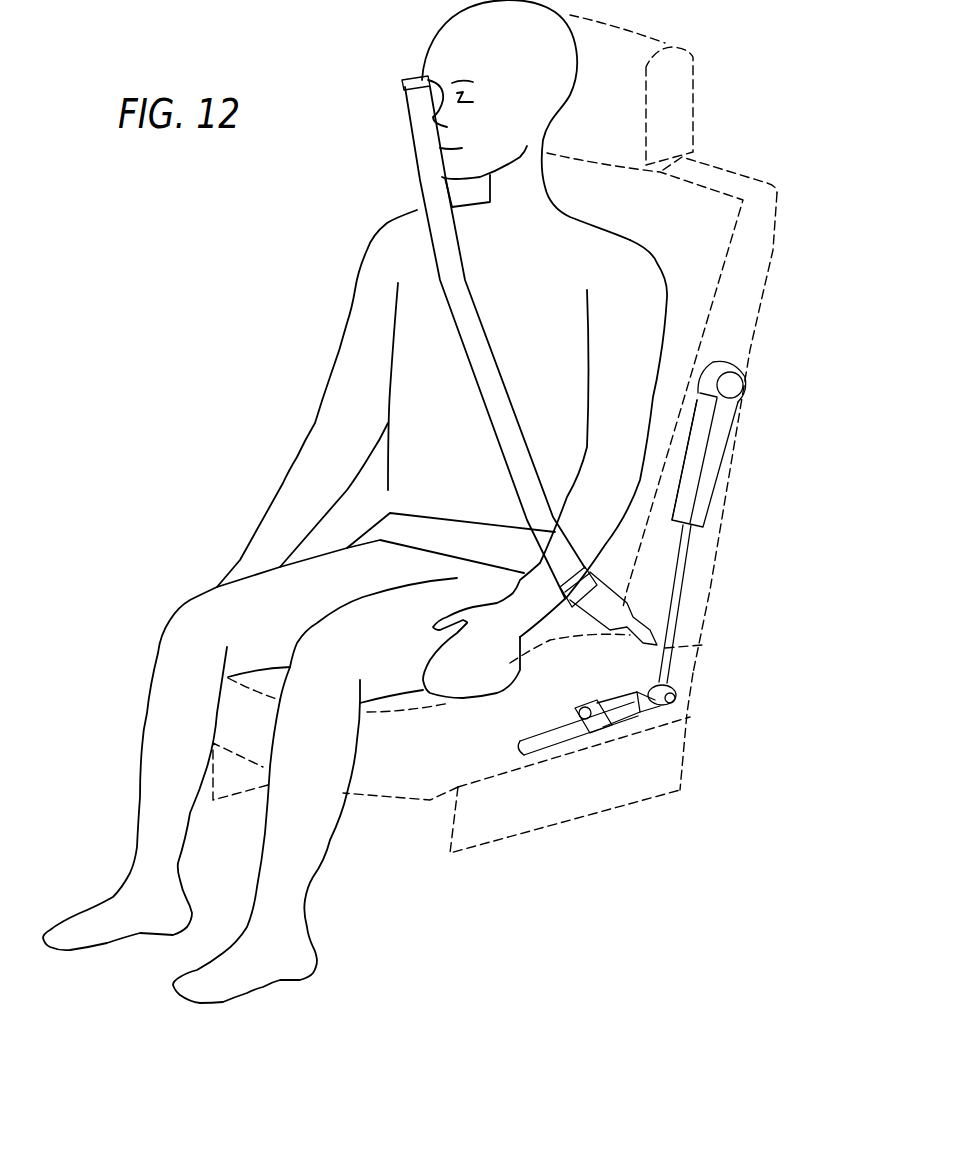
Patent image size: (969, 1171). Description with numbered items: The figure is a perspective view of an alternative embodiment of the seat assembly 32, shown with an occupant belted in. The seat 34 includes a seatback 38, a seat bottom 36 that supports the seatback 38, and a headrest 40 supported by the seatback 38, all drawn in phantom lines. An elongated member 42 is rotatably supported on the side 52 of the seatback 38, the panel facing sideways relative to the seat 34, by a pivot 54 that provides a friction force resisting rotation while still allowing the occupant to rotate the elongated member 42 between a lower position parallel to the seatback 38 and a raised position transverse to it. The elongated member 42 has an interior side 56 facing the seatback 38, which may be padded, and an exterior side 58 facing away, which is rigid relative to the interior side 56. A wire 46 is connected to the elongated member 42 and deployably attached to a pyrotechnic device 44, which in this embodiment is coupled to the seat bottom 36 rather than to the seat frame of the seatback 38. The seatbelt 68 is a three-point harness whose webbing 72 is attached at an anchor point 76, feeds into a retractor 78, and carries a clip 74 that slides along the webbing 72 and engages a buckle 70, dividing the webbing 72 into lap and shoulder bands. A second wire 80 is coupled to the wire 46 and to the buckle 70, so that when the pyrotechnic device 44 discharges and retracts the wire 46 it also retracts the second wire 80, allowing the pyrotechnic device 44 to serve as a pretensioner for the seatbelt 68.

The seat assembly 32 is at (763, 123).
The seat 34 is at (375, 808).
The seat bottom 36 is at (697, 683).
The seatback 38 is at (777, 247).
The headrest 40 is at (678, 67).
The elongated member 42 is at (727, 438).
The pyrotechnic device 44 is at (543, 752).
The wire 46 is at (682, 587).
The side 52 is at (755, 291).
The pivot 54 is at (726, 363).
The interior side 56 is at (690, 438).
The exterior side 58 is at (715, 487).
The seatbelt 68 is at (467, 395).
The buckle 70 is at (600, 617).
The webbing 72 is at (490, 425).
The clip 74 is at (565, 607).
The anchor point 76 is at (353, 547).
The retractor 78 is at (402, 80).
The second wire 80 is at (657, 647).